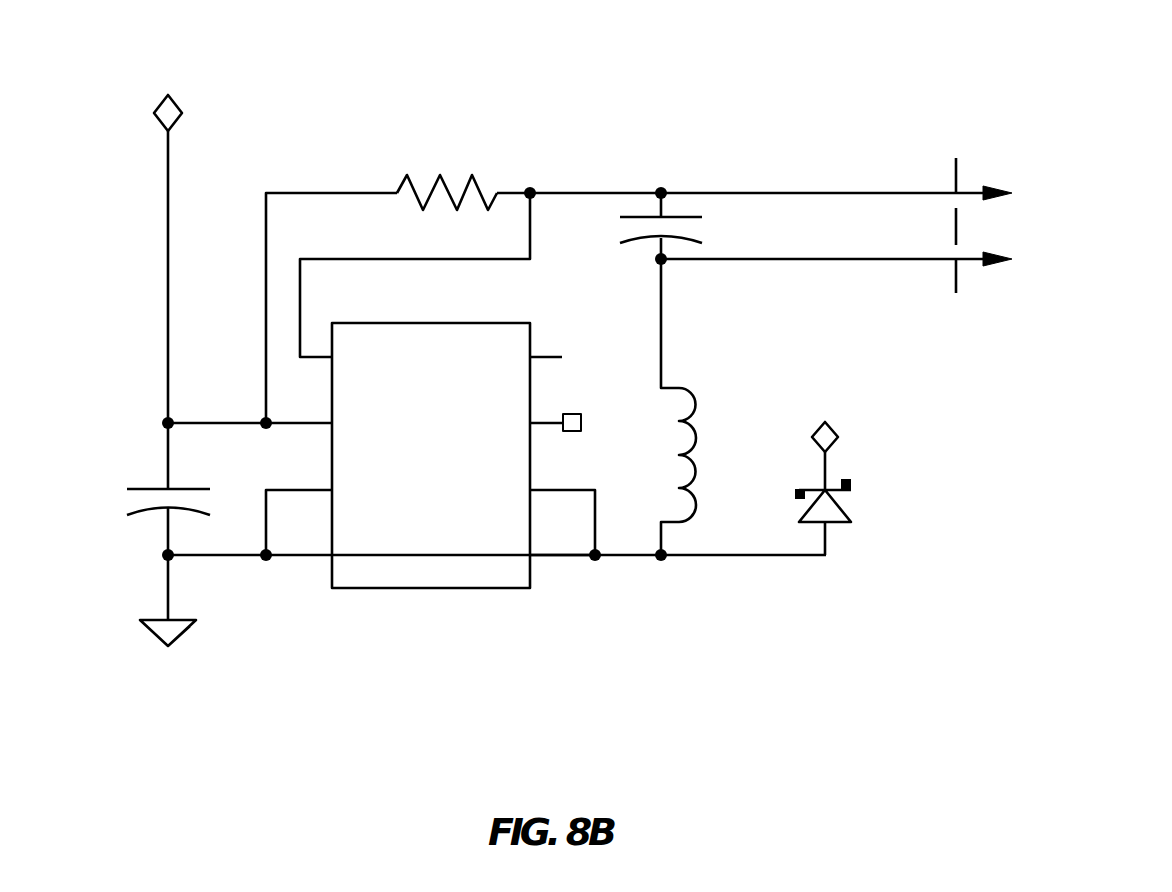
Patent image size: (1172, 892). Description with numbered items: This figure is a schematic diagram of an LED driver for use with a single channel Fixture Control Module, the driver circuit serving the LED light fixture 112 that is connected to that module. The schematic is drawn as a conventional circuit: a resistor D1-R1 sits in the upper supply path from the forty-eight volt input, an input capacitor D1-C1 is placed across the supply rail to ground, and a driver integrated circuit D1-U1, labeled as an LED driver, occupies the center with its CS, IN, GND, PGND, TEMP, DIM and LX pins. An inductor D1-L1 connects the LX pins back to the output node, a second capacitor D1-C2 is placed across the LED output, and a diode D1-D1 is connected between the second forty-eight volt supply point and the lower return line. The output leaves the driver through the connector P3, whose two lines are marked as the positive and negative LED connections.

The LED light fixture 1-1 112 is at (662, 122).
The resistor D1-R1 is at (447, 178).
The input capacitor 2.2uF D1-C1 is at (133, 503).
The output capacitor 0.1uF D1-C2 is at (694, 227).
The LED driver IC MAX16832A D1-U1 is at (431, 453).
The inductor 150uH D1-L1 is at (716, 407).
The diode D1-D1 is at (857, 500).
The LED connector P3 is at (957, 212).